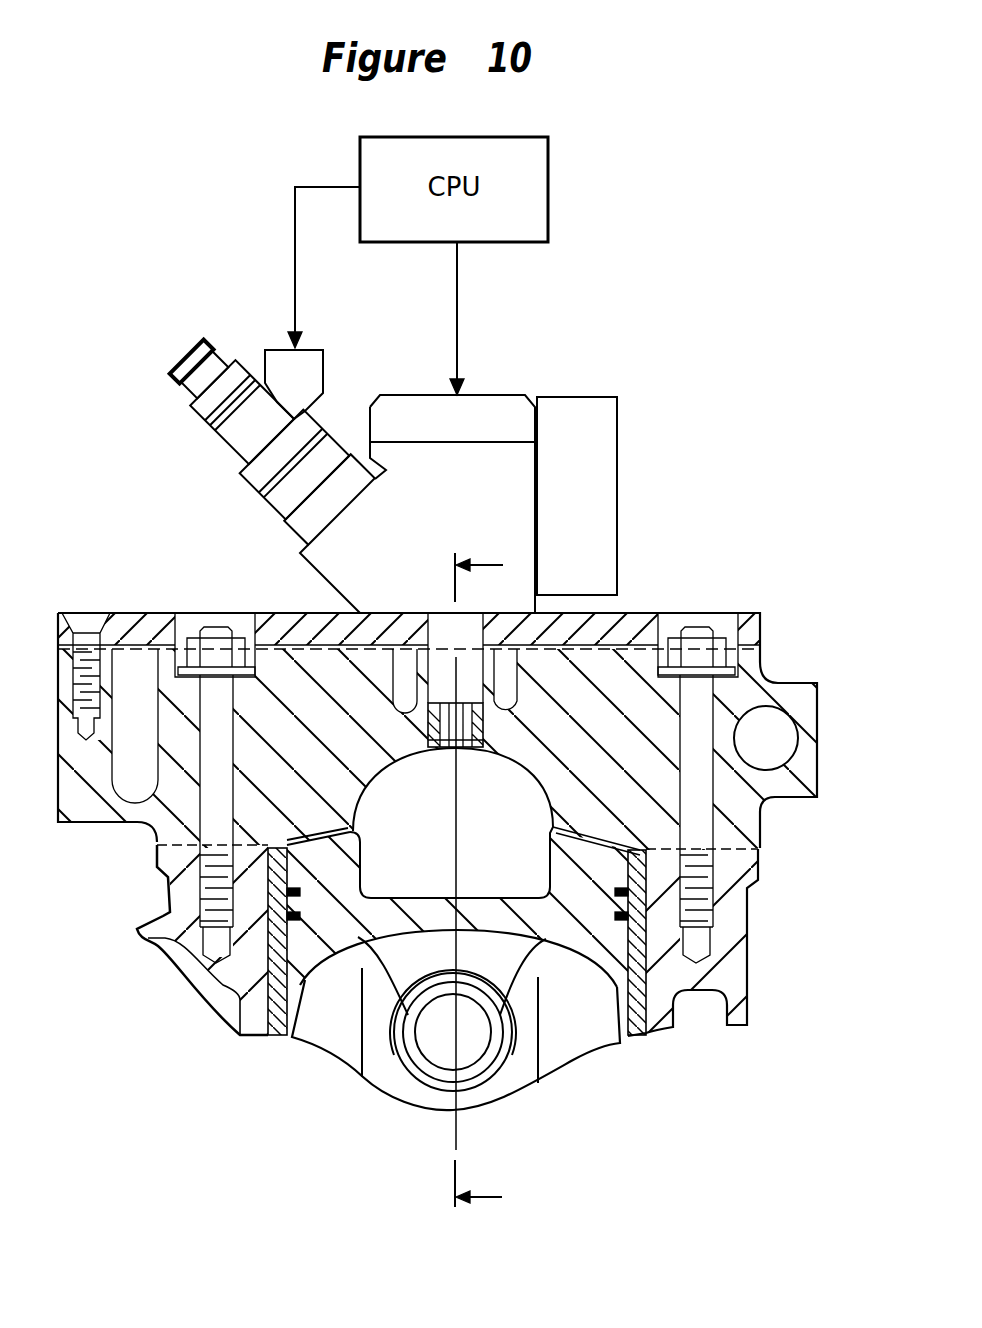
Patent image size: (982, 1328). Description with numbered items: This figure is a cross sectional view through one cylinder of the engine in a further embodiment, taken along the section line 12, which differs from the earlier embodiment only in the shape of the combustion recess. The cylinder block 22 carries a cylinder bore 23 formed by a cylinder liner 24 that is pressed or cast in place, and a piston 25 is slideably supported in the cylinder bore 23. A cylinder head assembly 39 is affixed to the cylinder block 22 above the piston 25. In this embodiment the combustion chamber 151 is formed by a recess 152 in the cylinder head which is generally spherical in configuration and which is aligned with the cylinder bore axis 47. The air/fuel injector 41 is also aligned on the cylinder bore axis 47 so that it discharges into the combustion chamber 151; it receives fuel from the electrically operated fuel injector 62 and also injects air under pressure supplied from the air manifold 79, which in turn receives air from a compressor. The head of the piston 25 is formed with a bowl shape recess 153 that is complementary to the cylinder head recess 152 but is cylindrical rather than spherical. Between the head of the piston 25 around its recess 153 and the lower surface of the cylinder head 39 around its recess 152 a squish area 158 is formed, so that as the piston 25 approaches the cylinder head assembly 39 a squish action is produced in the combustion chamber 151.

The section line 12- 12 is at (481, 881).
The cylinder block 22 is at (750, 975).
The cylinder bore 23 is at (620, 987).
The cylinder liner 24 is at (640, 1017).
The piston 25 is at (245, 1037).
The cylinder head assembly 39 is at (780, 680).
The air/fuel injector 41 is at (634, 448).
The cylinder bore axis 47 is at (463, 814).
The fuel injector 62 is at (247, 480).
The air manifold 79 is at (618, 556).
The combustion chamber 151 is at (432, 803).
The cylinder head recess 152 is at (535, 787).
The bowl shape recess 153 is at (398, 867).
The squish area 158 is at (582, 843).